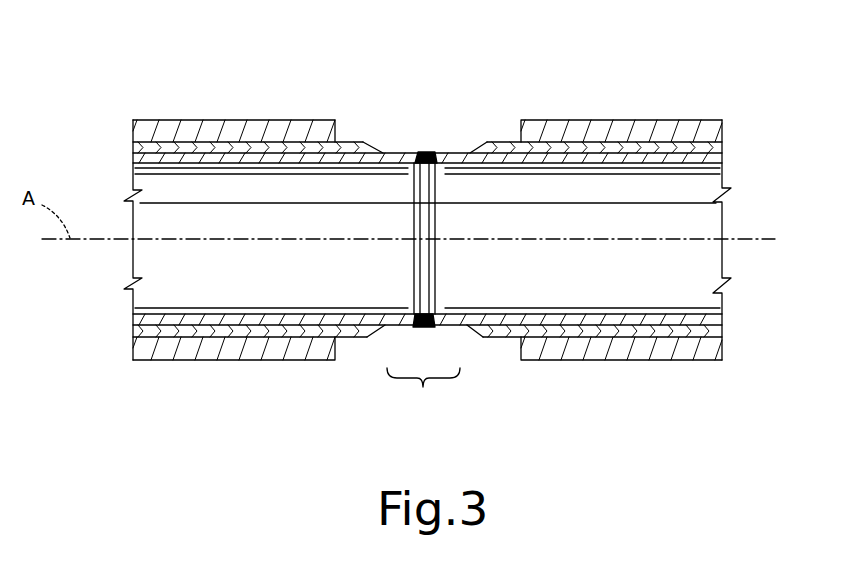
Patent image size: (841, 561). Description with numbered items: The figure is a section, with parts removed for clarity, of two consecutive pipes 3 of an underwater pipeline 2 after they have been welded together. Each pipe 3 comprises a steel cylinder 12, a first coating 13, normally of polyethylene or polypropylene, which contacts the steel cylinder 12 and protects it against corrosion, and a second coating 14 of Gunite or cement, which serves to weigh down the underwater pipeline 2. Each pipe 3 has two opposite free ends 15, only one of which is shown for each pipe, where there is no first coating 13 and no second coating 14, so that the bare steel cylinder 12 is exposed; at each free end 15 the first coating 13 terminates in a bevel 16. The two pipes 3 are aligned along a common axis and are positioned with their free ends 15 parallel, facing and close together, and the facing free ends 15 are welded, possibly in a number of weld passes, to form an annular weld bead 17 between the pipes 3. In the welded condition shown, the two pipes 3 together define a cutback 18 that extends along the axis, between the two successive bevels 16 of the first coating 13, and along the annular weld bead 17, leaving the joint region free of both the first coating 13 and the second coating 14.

The underwater pipeline 2 is at (605, 62).
The pipe 3 is at (170, 100).
The steel cylinder 12 is at (258, 157).
The first coating 13 is at (138, 147).
The second coating 14 is at (266, 120).
The free end 15 is at (405, 145).
The bevel 16 is at (375, 338).
The annular weld bead 17 is at (425, 328).
The cutback 18 is at (425, 395).